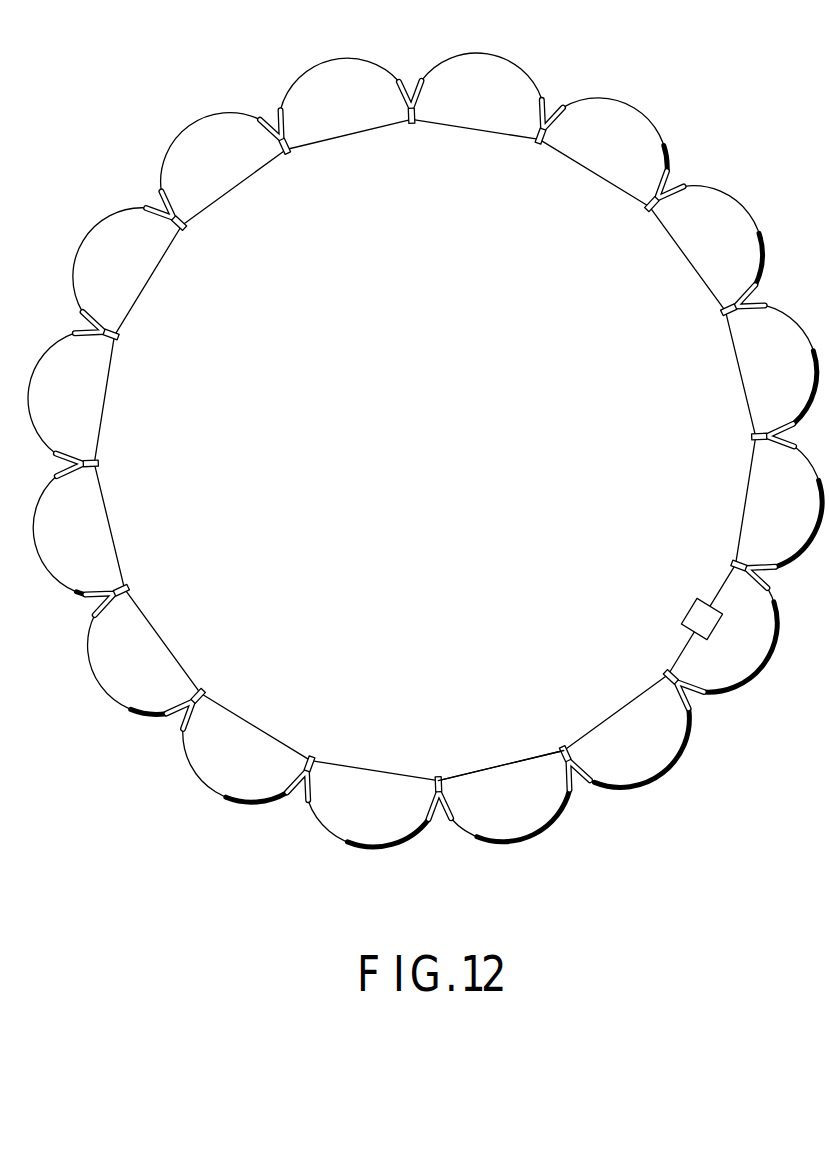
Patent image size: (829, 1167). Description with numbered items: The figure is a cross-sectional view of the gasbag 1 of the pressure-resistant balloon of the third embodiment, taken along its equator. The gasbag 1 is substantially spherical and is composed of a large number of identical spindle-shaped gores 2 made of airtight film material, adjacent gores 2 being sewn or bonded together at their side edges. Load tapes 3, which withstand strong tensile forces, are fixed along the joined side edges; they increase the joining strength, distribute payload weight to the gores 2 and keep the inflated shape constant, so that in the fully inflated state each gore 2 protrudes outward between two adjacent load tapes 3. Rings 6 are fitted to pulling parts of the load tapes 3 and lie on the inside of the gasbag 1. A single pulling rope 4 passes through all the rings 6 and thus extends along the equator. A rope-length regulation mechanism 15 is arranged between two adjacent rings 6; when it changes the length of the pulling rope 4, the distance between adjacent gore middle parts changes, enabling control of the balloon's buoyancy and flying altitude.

The gasbag 1 is at (258, 98).
The gore 2 is at (762, 670).
The load tape 3 is at (425, 793).
The pulling rope 4 is at (495, 762).
The ring 6 is at (125, 585).
The rope-length regulation mechanism 15 is at (688, 603).